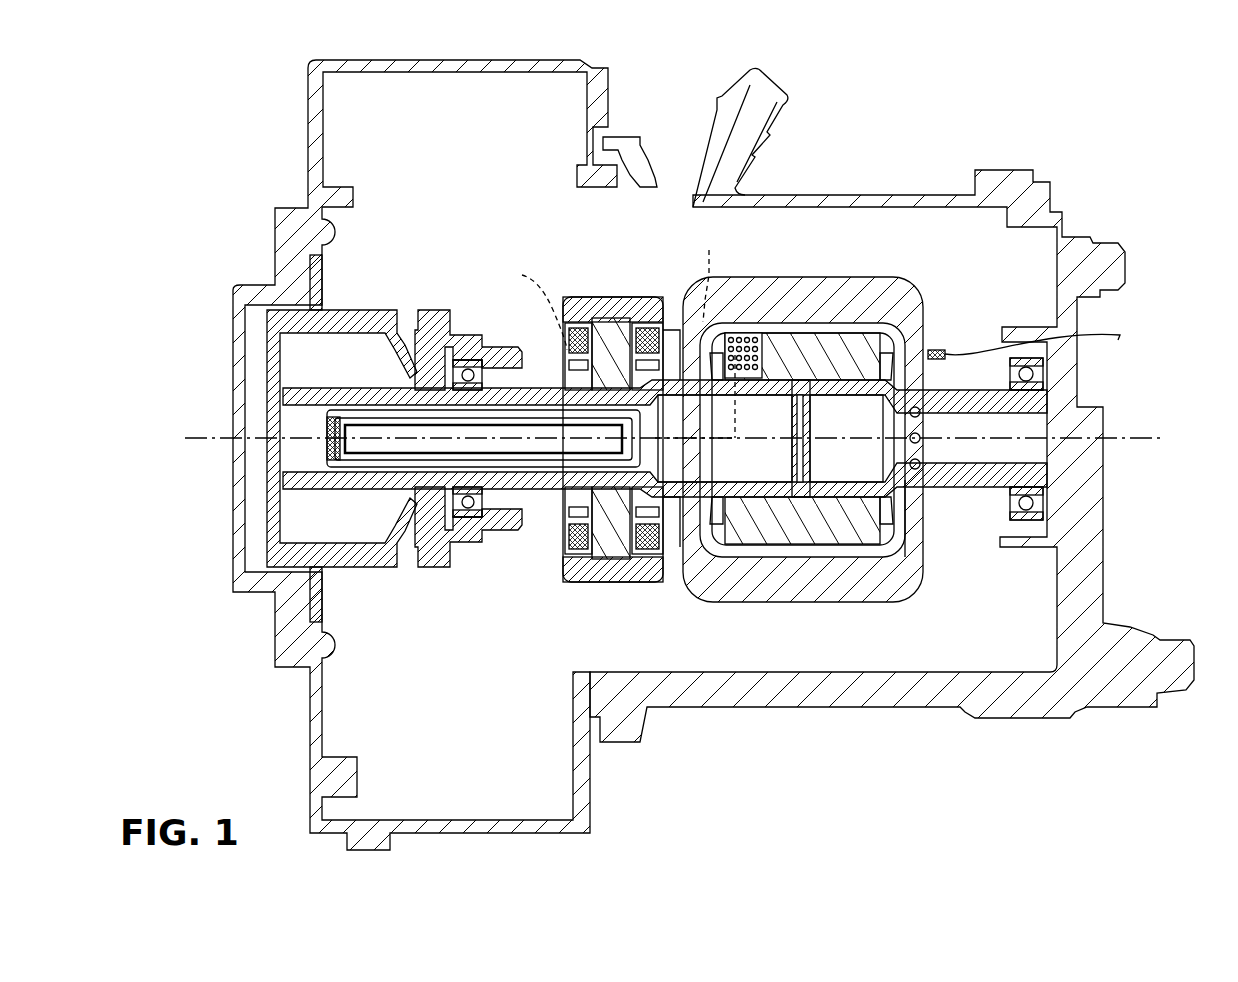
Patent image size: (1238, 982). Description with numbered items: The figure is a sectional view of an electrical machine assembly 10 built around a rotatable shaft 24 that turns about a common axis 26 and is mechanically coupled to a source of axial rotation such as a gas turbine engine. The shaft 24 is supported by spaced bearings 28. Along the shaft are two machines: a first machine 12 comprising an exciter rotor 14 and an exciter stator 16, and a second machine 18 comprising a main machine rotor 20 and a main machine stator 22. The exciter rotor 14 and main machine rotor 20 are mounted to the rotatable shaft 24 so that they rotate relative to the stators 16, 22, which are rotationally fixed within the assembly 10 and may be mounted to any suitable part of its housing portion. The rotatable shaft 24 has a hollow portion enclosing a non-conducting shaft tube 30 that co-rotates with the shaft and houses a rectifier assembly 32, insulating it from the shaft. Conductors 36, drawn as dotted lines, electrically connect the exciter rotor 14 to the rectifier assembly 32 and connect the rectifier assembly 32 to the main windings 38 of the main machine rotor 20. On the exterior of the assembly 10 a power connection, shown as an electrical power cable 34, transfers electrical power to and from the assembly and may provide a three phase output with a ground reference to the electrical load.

The electrical machine assembly 10 is at (903, 108).
The first machine 12 is at (665, 334).
The exciter rotor 14 is at (604, 345).
The exciter stator 16 is at (618, 332).
The second machine 18 is at (932, 513).
The main machine rotor 20 is at (835, 350).
The main machine stator 22 is at (852, 597).
The rotatable shaft 24 is at (316, 468).
The common axis 26 is at (691, 439).
The bearings 28 is at (453, 505).
The shaft tube 30 is at (328, 427).
The rectifier assembly 32 is at (327, 432).
The electrical power cable 34 is at (945, 352).
The conductors 36 is at (611, 285).
The main windings 38 is at (745, 340).